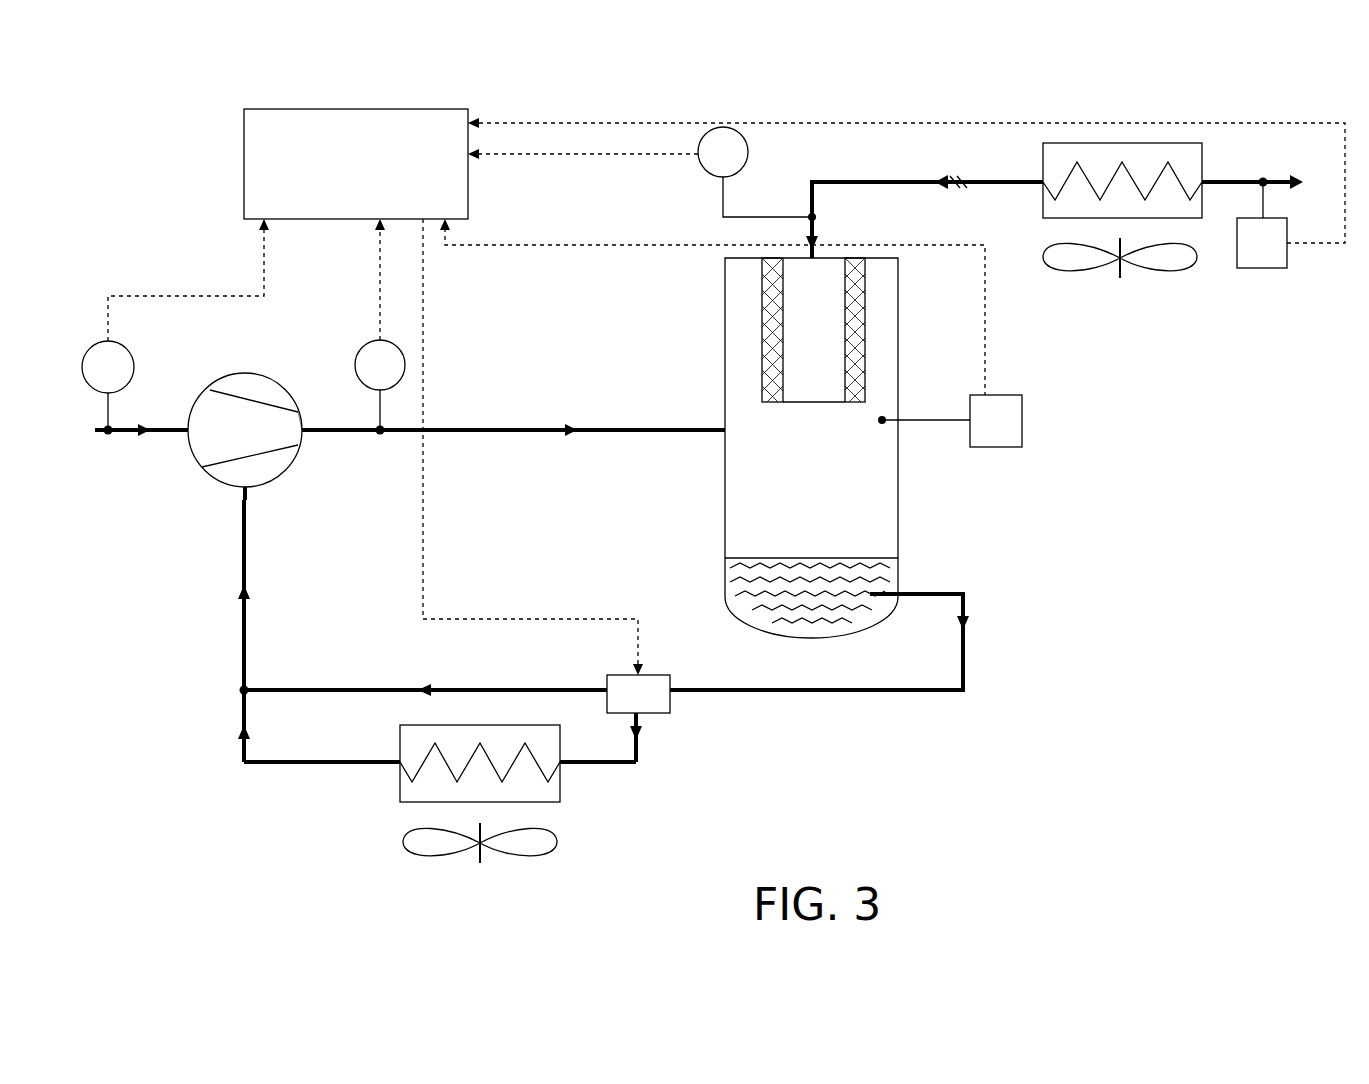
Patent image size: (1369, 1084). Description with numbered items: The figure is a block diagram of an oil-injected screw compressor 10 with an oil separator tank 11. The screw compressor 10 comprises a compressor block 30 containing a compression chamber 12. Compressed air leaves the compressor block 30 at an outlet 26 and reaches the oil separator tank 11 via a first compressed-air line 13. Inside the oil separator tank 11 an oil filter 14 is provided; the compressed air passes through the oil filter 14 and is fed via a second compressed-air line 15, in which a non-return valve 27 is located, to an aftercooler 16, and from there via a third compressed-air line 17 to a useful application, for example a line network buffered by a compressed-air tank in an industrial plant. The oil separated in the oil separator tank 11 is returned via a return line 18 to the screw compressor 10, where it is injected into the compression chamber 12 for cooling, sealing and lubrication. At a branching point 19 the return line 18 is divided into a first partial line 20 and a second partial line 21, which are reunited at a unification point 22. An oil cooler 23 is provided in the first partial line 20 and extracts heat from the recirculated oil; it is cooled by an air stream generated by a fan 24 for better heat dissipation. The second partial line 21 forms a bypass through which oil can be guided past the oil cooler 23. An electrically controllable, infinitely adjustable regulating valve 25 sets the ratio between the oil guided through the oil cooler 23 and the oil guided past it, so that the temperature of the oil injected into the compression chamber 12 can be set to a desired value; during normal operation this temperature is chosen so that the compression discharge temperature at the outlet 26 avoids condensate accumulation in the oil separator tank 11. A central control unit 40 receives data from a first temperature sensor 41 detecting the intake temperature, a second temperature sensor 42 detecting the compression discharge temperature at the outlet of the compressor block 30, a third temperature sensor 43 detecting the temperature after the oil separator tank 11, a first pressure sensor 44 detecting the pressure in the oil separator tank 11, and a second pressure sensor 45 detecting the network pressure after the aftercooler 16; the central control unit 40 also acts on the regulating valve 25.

The screw compressor 10 is at (182, 147).
The oil separator tank 11 is at (900, 500).
The compression chamber 12 is at (210, 447).
The first compressed-air line 13 is at (480, 430).
The oil filter 14 is at (760, 298).
The second compressed-air line 15 is at (848, 182).
The aftercooler 16 is at (1150, 143).
The third compressed-air line 17 is at (1235, 182).
The return line 18 is at (965, 692).
The branching point 19 is at (690, 718).
The first partial line 20 is at (290, 762).
The second partial line 21 is at (310, 690).
The unification point 22 is at (238, 690).
The oil cooler 23 is at (560, 790).
The fan 24 is at (560, 843).
The regulating valve 25 is at (636, 695).
The outlet 26 is at (300, 405).
The non-return valve 27 is at (960, 182).
The compressor block 30 is at (280, 480).
The central control unit 40 is at (356, 164).
The first temperature sensor 41 is at (98, 345).
The second temperature sensor 42 is at (360, 350).
The third temperature sensor 43 is at (745, 138).
The first pressure sensor 44 is at (1022, 420).
The second pressure sensor 45 is at (1262, 270).